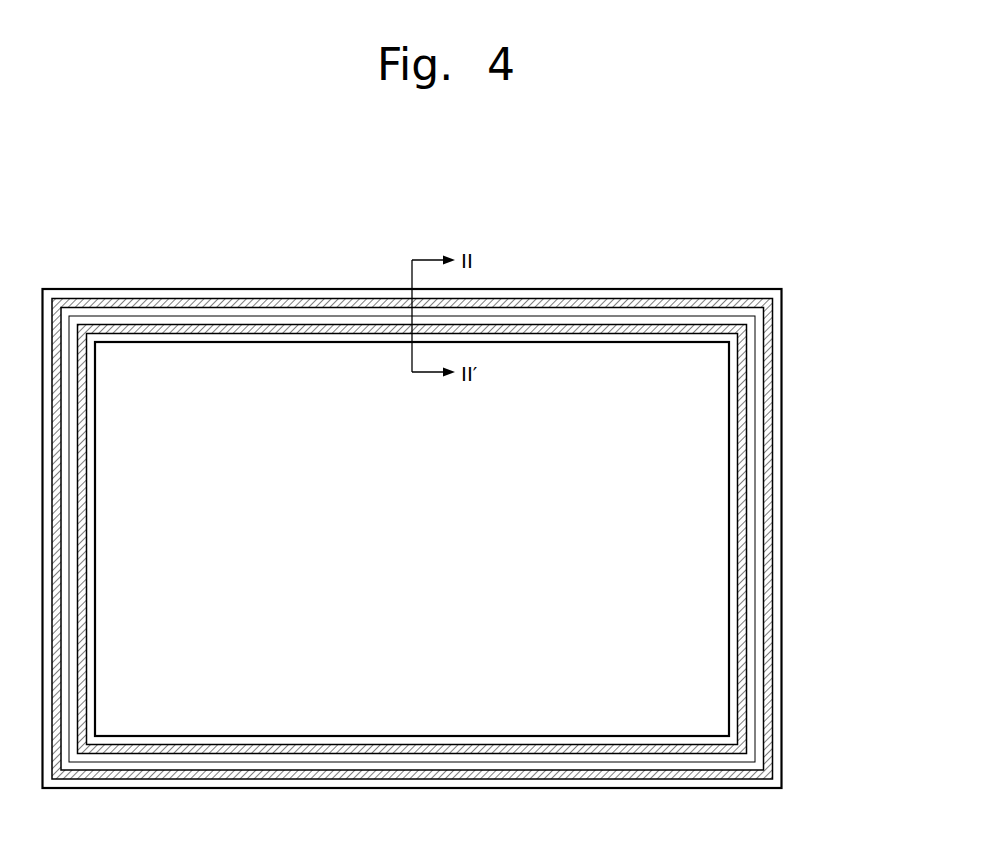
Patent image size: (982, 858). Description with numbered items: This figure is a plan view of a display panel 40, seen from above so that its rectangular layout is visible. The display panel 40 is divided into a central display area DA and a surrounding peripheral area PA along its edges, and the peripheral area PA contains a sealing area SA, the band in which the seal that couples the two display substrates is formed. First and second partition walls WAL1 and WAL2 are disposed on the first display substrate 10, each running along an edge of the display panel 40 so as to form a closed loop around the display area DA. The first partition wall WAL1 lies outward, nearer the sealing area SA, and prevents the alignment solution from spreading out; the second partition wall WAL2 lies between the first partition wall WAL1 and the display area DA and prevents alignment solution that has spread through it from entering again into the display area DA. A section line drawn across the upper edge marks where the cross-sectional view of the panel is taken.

The first display substrate 10 is at (778, 583).
The display panel 40 is at (789, 288).
The first partition wall WAL1 is at (772, 537).
The second partition wall WAL2 is at (746, 490).
The display area DA is at (95, 337).
The peripheral area PA is at (782, 195).
The sealing area SA is at (782, 242).